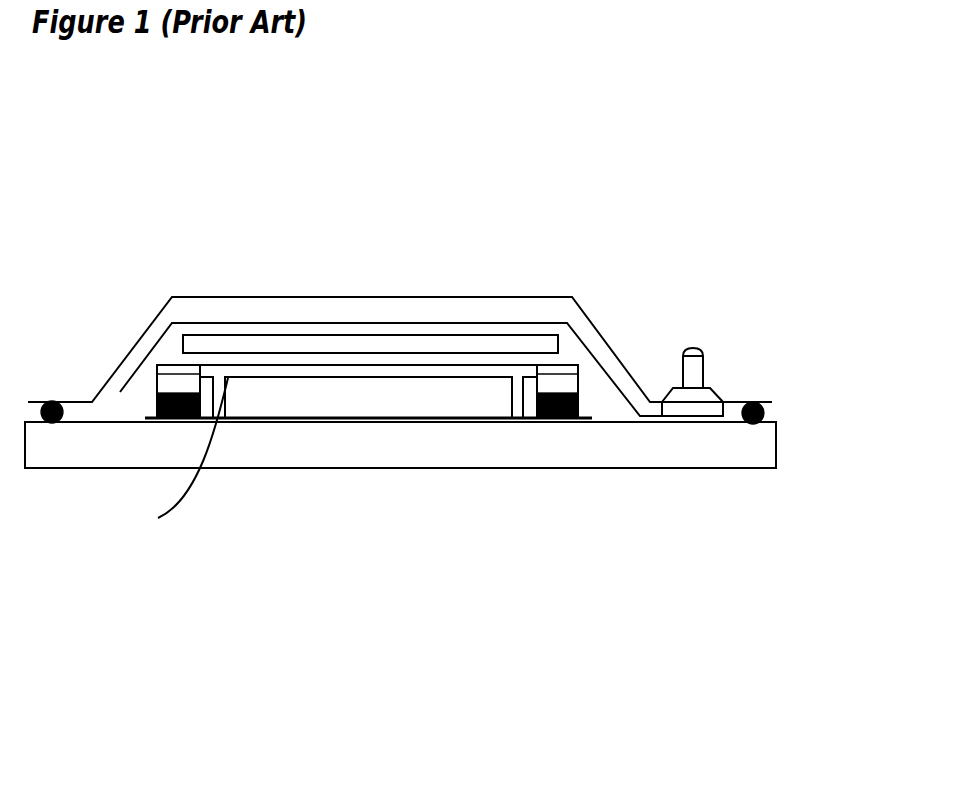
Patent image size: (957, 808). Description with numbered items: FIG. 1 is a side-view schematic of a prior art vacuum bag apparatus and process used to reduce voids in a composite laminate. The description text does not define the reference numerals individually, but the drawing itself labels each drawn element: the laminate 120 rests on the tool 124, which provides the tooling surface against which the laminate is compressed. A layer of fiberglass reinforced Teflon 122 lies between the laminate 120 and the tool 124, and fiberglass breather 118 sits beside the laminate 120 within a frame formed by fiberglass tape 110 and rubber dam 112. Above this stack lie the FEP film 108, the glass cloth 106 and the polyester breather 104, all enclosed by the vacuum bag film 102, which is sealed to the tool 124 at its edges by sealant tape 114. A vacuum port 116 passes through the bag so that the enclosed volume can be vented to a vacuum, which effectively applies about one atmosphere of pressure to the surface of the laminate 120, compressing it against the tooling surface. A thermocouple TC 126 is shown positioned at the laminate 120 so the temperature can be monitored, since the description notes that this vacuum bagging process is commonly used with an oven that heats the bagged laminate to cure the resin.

The vacuum bag film 102 is at (401, 208).
The polyester breather 104 is at (450, 241).
The glass cloth 106 is at (452, 238).
The FEP film 108 is at (439, 266).
The fiberglass tape 110 is at (520, 320).
The rubber dam 112 is at (517, 344).
The sealant tape 114 is at (402, 322).
The vacuum port 116 is at (703, 370).
The fiberglass breather 118 is at (534, 462).
The laminate 120 is at (462, 507).
The fiberglass reinforced Teflon 122 is at (509, 569).
The tool 124 is at (400, 445).
The thermocouple 126 is at (226, 486).